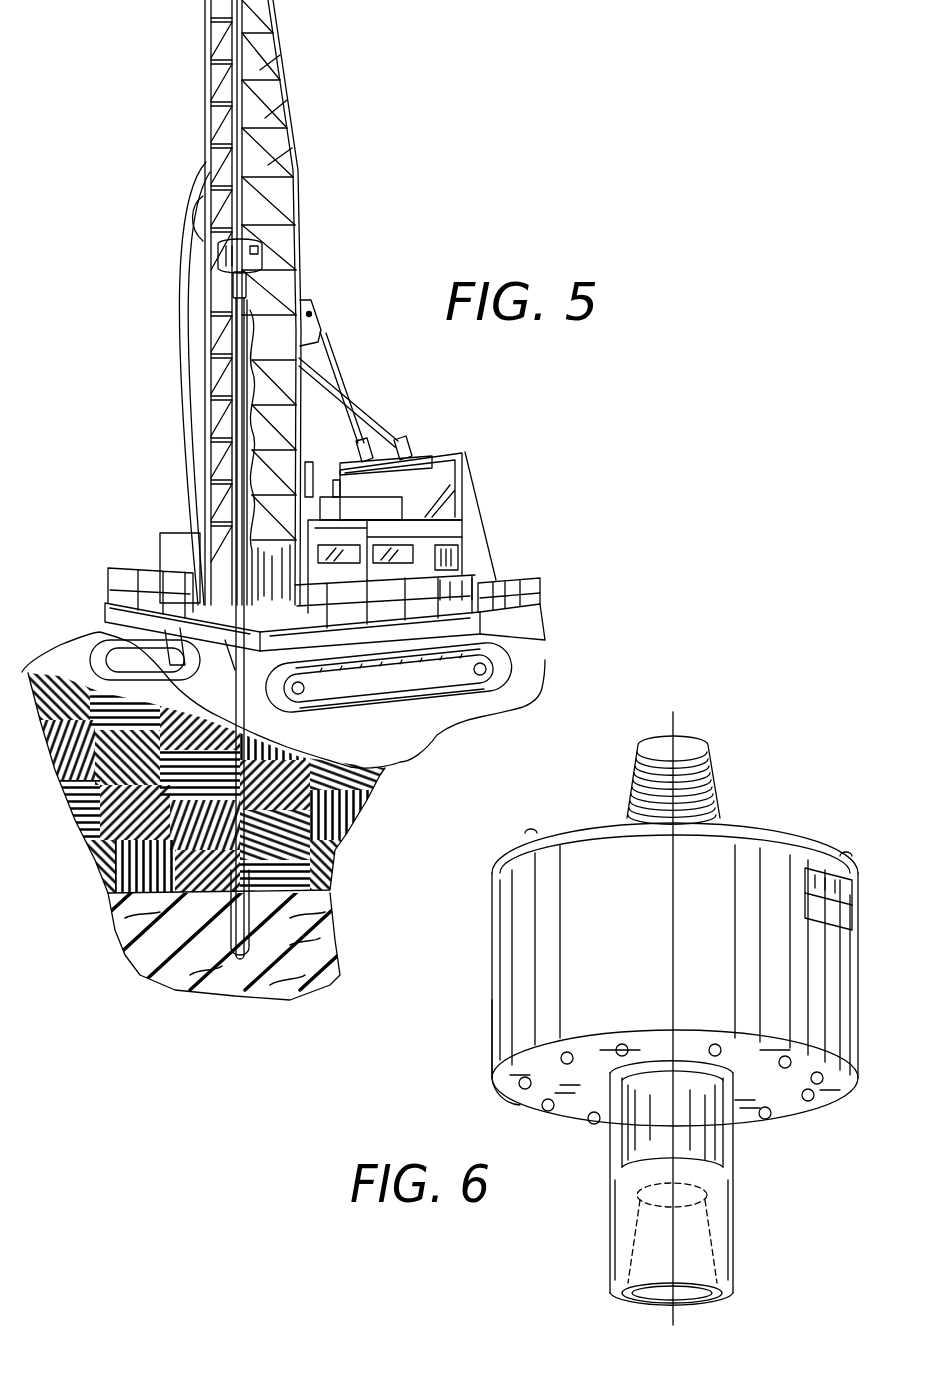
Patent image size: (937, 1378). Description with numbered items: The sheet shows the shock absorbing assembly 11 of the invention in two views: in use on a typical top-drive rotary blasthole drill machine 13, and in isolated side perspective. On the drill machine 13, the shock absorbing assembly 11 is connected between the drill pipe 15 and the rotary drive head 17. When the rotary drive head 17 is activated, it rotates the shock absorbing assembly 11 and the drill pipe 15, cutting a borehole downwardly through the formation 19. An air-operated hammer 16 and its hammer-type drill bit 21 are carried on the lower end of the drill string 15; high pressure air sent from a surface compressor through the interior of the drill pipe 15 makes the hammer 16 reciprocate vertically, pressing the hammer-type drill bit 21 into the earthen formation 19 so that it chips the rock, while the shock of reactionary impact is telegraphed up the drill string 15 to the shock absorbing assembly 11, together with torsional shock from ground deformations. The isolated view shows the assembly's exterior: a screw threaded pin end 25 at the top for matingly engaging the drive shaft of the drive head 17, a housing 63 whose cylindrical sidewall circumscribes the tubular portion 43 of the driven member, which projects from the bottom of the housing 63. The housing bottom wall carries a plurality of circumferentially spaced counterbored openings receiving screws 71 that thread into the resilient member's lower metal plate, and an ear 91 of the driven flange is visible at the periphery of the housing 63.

In FIG. 5, the shock absorbing assembly 11 is at (262, 254).
In FIG. 6, the shock absorbing assembly 11 is at (482, 1056).
In FIG. 5, the rotary blasthole drill machine 13 is at (165, 228).
In FIG. 5, the drill pipe 15 is at (236, 388).
In FIG. 5, the air-operated hammer 16 is at (130, 945).
In FIG. 5, the rotary drive head 17 is at (295, 197).
In FIG. 5, the formation 19 is at (345, 895).
In FIG. 5, the hammer-type drill bit 21 is at (248, 930).
In FIG. 6, the pin end 25 is at (714, 770).
In FIG. 6, the tubular portion 43 is at (610, 1212).
In FIG. 6, the housing 63 is at (520, 987).
In FIG. 6, the screws 71 is at (812, 1102).
In FIG. 6, the ear 91 is at (822, 880).